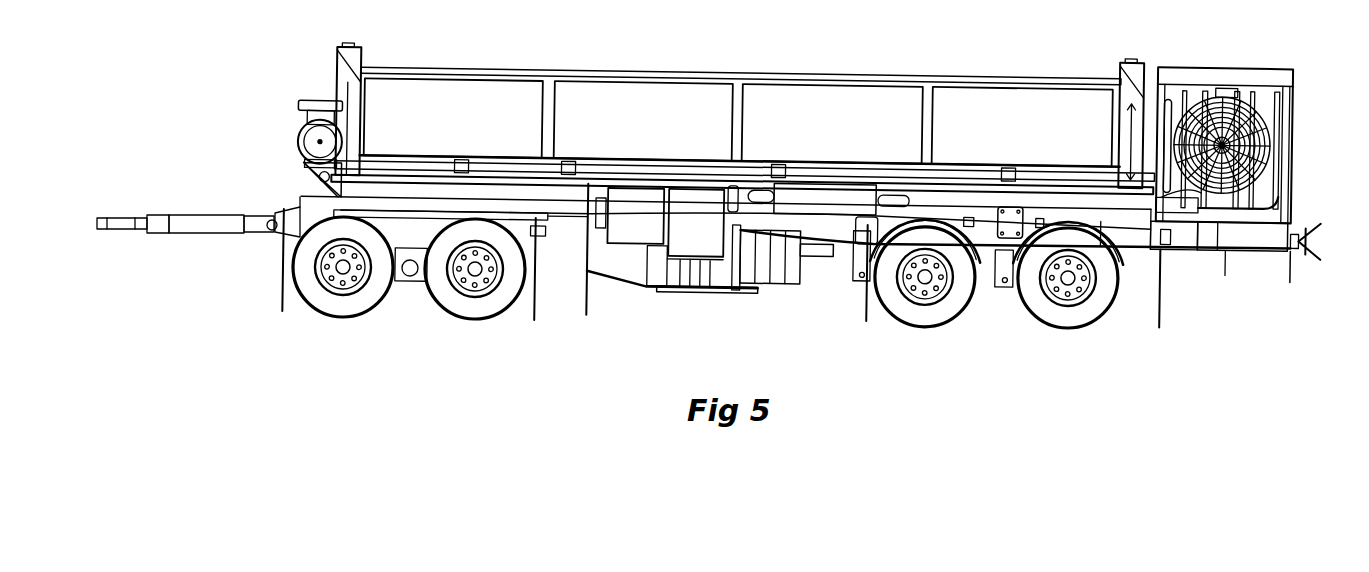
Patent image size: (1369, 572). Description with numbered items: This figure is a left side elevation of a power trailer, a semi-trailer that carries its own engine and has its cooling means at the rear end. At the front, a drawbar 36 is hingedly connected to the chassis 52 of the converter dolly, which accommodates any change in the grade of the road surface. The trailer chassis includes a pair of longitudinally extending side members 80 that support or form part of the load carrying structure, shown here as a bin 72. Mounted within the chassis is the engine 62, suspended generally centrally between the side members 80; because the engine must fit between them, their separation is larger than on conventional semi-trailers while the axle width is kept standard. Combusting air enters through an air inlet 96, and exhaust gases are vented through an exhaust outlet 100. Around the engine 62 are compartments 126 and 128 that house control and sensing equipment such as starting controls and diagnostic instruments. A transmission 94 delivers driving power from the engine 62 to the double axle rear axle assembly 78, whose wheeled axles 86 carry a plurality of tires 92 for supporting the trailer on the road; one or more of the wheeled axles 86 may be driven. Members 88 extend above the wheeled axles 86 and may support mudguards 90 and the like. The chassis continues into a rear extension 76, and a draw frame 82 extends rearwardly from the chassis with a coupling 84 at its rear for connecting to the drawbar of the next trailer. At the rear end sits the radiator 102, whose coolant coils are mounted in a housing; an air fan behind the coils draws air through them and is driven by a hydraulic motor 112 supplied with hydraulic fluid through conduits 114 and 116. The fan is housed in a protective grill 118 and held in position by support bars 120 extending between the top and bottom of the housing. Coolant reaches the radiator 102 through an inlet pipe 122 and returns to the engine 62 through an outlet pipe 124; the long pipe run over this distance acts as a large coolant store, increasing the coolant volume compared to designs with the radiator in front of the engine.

The drawbar 36 is at (207, 222).
The chassis of the converter dolly 52 is at (308, 217).
The air inlet 96 is at (318, 102).
The bin 72 is at (970, 128).
The exhaust outlet 100 is at (810, 195).
The members 88 is at (1040, 220).
The compartment 126 is at (633, 223).
The engine 62 is at (703, 240).
The compartment 128 is at (712, 287).
The side members 80 is at (780, 225).
The transmission 94 is at (822, 257).
The rear axle assembly 78 is at (984, 320).
The tires 92 is at (1090, 310).
The wheeled axles 86 is at (918, 288).
The radiator 102 is at (1298, 152).
The protective grill 118 is at (1263, 117).
The inlet pipe 122 is at (1163, 118).
The conduit 114 is at (1183, 110).
The hydraulic motor 112 is at (1222, 97).
The support bars 120 is at (1243, 110).
The outlet pipe 124 is at (1278, 203).
The conduit 116 is at (1217, 203).
The rear extension 76 is at (1225, 243).
The mudguards 90 is at (1160, 312).
The draw frame 82 is at (1293, 243).
The coupling 84 is at (1310, 237).